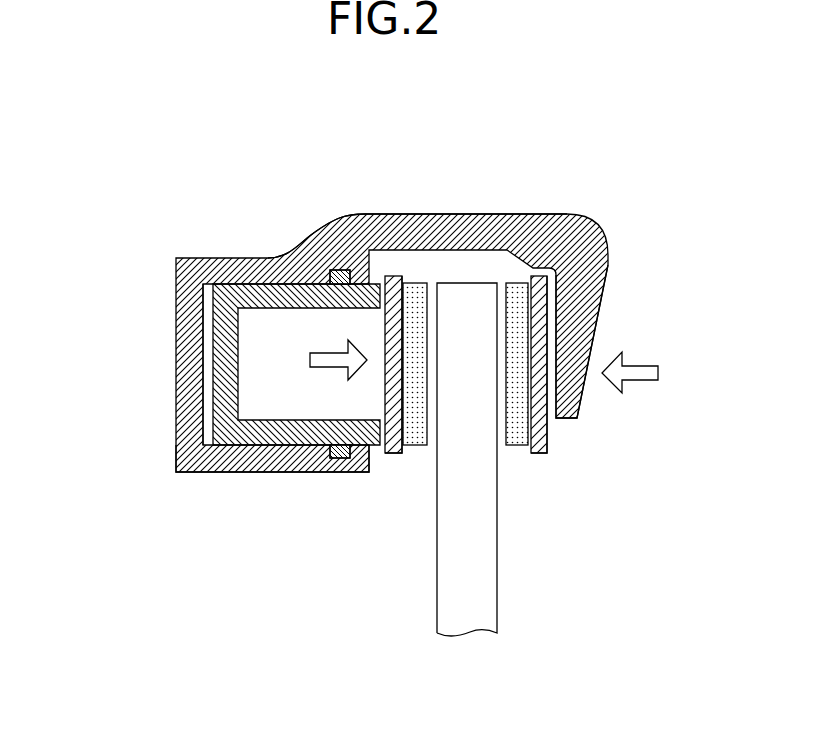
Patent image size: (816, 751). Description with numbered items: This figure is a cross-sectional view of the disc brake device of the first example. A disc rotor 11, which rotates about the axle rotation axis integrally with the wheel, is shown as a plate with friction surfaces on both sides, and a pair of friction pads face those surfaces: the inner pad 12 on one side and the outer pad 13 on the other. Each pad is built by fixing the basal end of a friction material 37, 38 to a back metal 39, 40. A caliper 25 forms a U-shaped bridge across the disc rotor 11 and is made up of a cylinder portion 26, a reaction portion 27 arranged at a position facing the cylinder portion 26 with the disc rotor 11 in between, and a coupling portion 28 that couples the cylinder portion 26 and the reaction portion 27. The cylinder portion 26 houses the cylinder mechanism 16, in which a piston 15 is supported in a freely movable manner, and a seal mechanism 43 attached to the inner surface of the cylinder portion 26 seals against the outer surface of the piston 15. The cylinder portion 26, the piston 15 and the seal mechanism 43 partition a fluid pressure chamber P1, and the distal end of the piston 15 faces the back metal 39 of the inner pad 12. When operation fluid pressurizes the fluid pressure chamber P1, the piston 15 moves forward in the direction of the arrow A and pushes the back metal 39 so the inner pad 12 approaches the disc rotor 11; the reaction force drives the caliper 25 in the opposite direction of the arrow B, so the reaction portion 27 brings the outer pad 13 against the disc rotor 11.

The disc rotor 11 is at (457, 606).
The inner pad 12 is at (420, 446).
The outer pad 13 is at (510, 446).
The piston 15 is at (292, 417).
The cylinder mechanism 16 is at (227, 243).
The caliper 25 is at (478, 214).
The cylinder portion 26 is at (220, 475).
The reaction portion 27 is at (582, 273).
The coupling portion 28 is at (370, 240).
The friction material 37 is at (407, 447).
The friction material 38 is at (520, 420).
The back metal 39 is at (390, 275).
The back metal 40 is at (536, 275).
The seal mechanism 43 is at (346, 268).
The fluid pressure chamber P1 is at (207, 317).
The arrow A is at (320, 347).
The arrow B is at (647, 381).